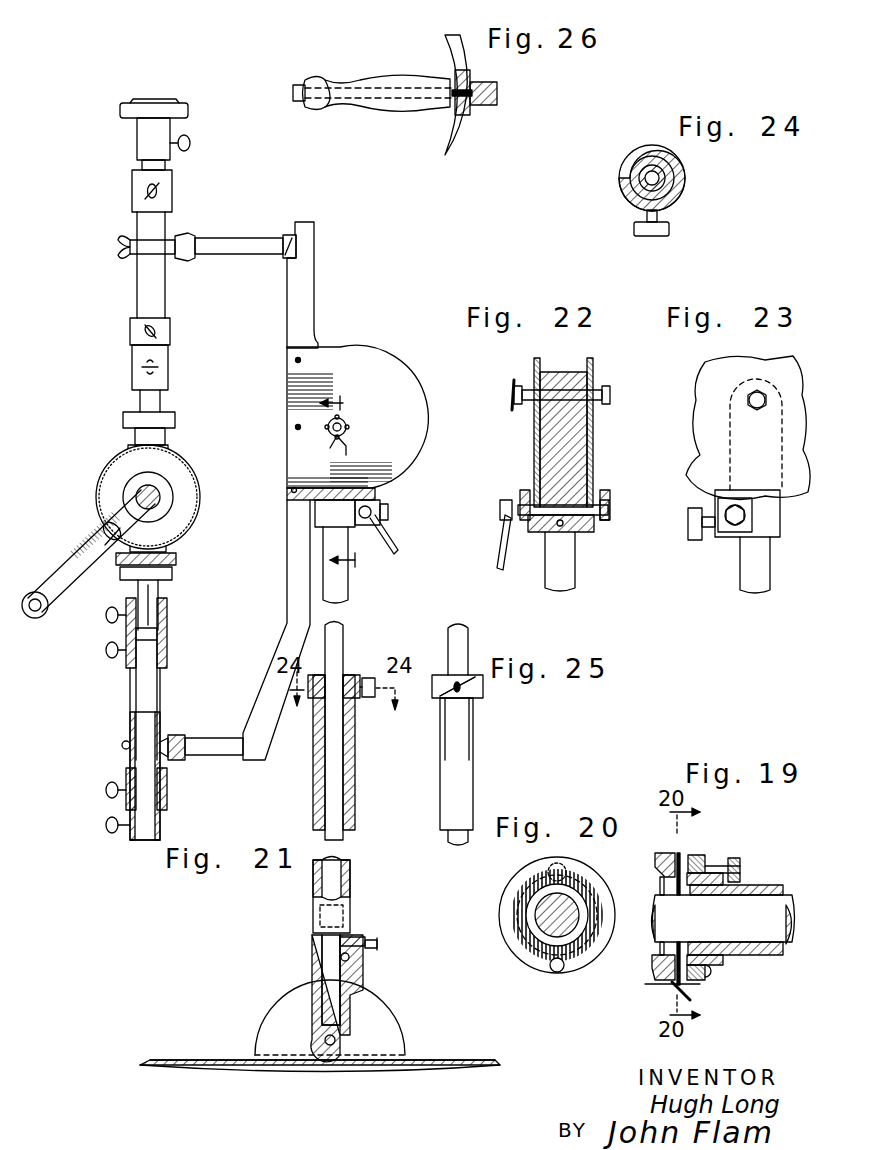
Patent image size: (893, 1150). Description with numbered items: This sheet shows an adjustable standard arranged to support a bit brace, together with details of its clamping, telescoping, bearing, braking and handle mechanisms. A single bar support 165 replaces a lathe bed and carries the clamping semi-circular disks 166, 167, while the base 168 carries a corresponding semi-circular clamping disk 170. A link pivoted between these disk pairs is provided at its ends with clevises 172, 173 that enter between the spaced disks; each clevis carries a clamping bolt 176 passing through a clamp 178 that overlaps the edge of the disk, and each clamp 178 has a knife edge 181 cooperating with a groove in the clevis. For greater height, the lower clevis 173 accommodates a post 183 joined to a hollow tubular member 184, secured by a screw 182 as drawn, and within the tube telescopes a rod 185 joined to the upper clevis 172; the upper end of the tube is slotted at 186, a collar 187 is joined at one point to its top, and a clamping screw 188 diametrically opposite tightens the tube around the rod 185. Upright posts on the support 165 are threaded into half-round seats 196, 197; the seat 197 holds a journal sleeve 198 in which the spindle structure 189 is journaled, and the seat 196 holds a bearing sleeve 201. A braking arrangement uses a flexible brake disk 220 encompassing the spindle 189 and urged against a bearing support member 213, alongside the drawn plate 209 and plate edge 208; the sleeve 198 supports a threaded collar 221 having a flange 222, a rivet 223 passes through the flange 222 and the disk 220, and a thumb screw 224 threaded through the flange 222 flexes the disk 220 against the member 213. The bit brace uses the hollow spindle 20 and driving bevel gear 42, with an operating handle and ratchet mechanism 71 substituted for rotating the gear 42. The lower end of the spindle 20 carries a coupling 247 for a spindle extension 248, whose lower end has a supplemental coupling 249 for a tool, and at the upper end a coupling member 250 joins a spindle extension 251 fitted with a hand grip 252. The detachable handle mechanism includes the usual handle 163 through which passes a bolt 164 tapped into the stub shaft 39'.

In FIG. 21, the hand grip 252 is at (172, 106).
In FIG. 21, the spindle extension 251 is at (140, 164).
In FIG. 21, the half-round seat 197 is at (183, 238).
In FIG. 21, the single bar support 165 is at (305, 320).
In FIG. 21, the coupling member 250 is at (170, 357).
In FIG. 21, the hollow spindle 20 is at (150, 402).
In FIG. 21, the driving bevel gear 42 is at (182, 475).
In FIG. 21, the operating handle and ratchet mechanism 71 is at (78, 552).
In FIG. 21, the clamping semi-circular disk 166 is at (395, 405).
In FIG. 22, the clamping semi-circular disk 166 is at (533, 447).
In FIG. 21, the clevis 172 is at (320, 514).
In FIG. 22, the clevis 172 is at (558, 373).
In FIG. 23, the clevis 172 is at (778, 381).
In FIG. 21, the clamp 178 is at (360, 501).
In FIG. 22, the clamp 178 is at (600, 508).
In FIG. 23, the clamp 178 is at (715, 501).
In FIG. 21, the rod 185 is at (340, 633).
In FIG. 25, the rod 185 is at (455, 844).
In FIG. 24, the rod 185 is at (653, 168).
In FIG. 21, the collar 187 is at (308, 702).
In FIG. 25, the collar 187 is at (440, 690).
In FIG. 24, the collar 187 is at (680, 193).
In FIG. 21, the clamping screw 188 is at (368, 676).
In FIG. 25, the clamping screw 188 is at (455, 693).
In FIG. 24, the clamping screw 188 is at (645, 231).
In FIG. 21, the bearing sleeve 201 is at (130, 713).
In FIG. 21, the coupling 247 is at (167, 648).
In FIG. 21, the spindle extension 248 is at (148, 691).
In FIG. 21, the half-round seat 196 is at (178, 760).
In FIG. 21, the supplemental coupling 249 is at (152, 842).
In FIG. 21, the hollow tubular member 184 is at (352, 873).
In FIG. 25, the hollow tubular member 184 is at (465, 791).
In FIG. 21, the screw 182 is at (372, 940).
In FIG. 21, the post 183 is at (330, 958).
In FIG. 21, the clevis 173 is at (357, 965).
In FIG. 21, the clamping semi-circular disk 170 is at (383, 1010).
In FIG. 21, the base 168 is at (210, 1062).
In FIG. 25, the slot 186 is at (474, 726).
In FIG. 26, the handle 163 is at (405, 108).
In FIG. 26, the bolt 164 is at (385, 88).
In FIG. 26, the stub shaft 39' is at (488, 95).
In FIG. 22, the clamping semi-circular disk 167 is at (594, 448).
In FIG. 23, the clamping semi-circular disk 167 is at (700, 447).
In FIG. 22, the clamping bolt 176 is at (522, 499).
In FIG. 22, the knife edge 181 is at (530, 536).
In FIG. 20, the flexible brake disk 220 is at (508, 920).
In FIG. 19, the flexible brake disk 220 is at (692, 868).
In FIG. 20, the spindle structure 189 is at (545, 925).
In FIG. 19, the spindle structure 189 is at (770, 927).
In FIG. 20, the rivet 223 is at (557, 973).
In FIG. 19, the rivet 223 is at (665, 988).
In FIG. 19, the journal sleeve 198 is at (757, 887).
In FIG. 19, the plate 209 is at (670, 853).
In FIG. 19, the plate edge 208 is at (690, 855).
In FIG. 19, the bearing support member 213 is at (660, 869).
In FIG. 19, the thumb screw 224 is at (740, 861).
In FIG. 19, the threaded collar 221 is at (716, 963).
In FIG. 19, the flange 222 is at (688, 986).